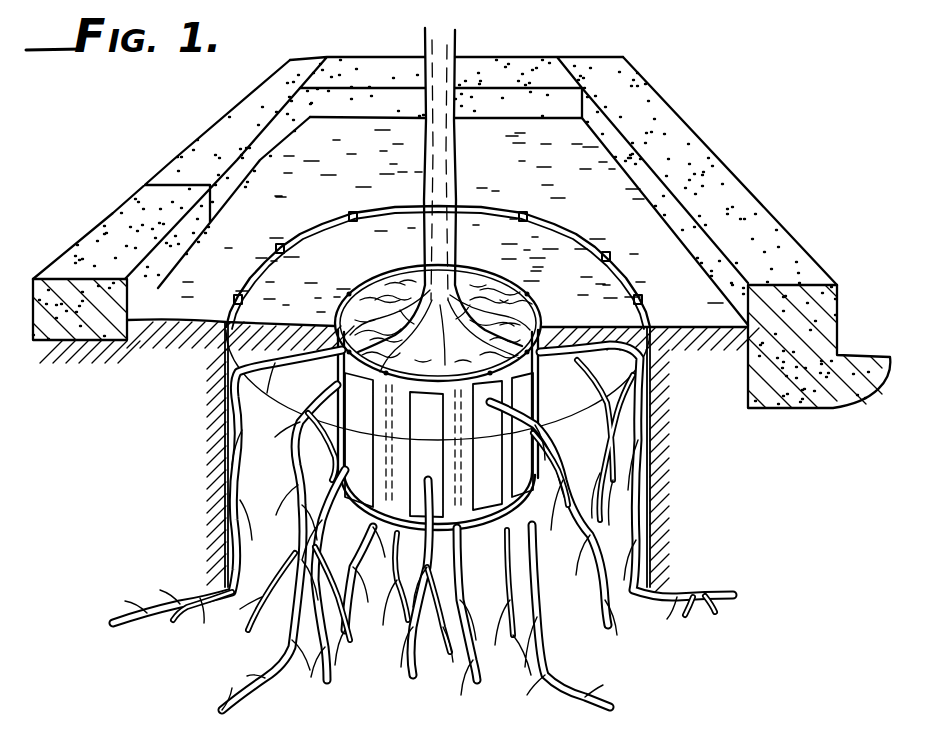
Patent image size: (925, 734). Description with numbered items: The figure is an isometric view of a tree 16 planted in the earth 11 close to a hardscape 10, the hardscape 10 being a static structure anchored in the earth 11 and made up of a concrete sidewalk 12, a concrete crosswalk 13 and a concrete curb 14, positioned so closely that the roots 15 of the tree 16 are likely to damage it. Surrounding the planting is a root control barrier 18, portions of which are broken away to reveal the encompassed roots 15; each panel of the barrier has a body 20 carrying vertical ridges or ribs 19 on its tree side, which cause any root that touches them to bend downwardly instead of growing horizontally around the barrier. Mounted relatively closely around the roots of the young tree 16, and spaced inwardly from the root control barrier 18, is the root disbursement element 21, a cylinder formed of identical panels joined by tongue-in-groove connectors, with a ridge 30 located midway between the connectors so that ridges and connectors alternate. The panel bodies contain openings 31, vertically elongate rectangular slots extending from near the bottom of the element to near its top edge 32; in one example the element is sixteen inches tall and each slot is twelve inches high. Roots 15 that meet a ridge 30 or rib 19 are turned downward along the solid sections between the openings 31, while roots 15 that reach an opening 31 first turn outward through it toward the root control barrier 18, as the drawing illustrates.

The hardscape 10 is at (673, 53).
The earth 11 is at (152, 323).
The concrete sidewalk 12 is at (113, 210).
The concrete crosswalk 13 is at (507, 60).
The concrete curb 14 is at (703, 152).
The roots 15 is at (238, 345).
The tree 16 is at (423, 43).
The root control barrier 18 is at (347, 205).
The vertical ridges or ribs 19 is at (285, 249).
The body 20 is at (655, 405).
The root disbursement element 21 is at (335, 300).
The ridge 30 is at (502, 282).
The openings 31 is at (352, 448).
The top edge 32 is at (404, 266).